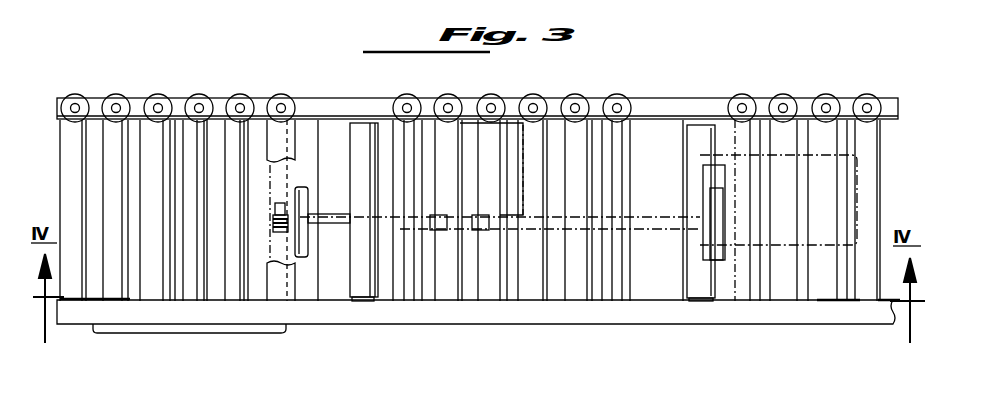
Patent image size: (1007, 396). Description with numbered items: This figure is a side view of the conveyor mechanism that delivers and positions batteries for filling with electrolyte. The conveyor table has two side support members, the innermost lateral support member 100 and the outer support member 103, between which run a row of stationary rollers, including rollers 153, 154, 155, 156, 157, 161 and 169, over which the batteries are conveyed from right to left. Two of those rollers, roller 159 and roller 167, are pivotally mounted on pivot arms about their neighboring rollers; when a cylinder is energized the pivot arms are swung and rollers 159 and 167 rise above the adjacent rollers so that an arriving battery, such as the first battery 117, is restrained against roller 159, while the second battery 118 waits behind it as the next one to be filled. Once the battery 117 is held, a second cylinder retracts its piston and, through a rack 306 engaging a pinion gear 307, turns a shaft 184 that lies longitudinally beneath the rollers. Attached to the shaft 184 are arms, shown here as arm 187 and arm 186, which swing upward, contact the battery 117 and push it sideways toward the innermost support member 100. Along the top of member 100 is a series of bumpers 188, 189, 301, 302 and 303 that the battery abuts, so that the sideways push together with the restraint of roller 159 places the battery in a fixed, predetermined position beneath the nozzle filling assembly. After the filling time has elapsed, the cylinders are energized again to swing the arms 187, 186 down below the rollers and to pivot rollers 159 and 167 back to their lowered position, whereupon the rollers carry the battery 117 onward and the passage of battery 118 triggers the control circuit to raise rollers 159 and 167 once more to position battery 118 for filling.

The side support member 100 is at (323, 103).
The side support member 103 is at (656, 316).
The first battery 117 is at (510, 133).
The second battery 118 is at (762, 163).
The roller 153 is at (72, 283).
The roller 154 is at (105, 279).
The roller 155 is at (152, 278).
The roller 156 is at (197, 281).
The roller 157 is at (242, 278).
The pivotally mounted roller 159 is at (360, 132).
The roller 161 is at (407, 289).
The pivotally mounted roller 167 is at (695, 137).
The roller 169 is at (748, 289).
The shaft 184 is at (658, 222).
The block 186 is at (482, 232).
The arm 187 is at (438, 232).
The bumper 188 is at (74, 93).
The bumper 189 is at (113, 95).
The bumper 301 is at (403, 100).
The bumper 302 is at (443, 100).
The bumper 303 is at (492, 100).
The rack 306 is at (281, 205).
The pinion gear 307 is at (288, 232).